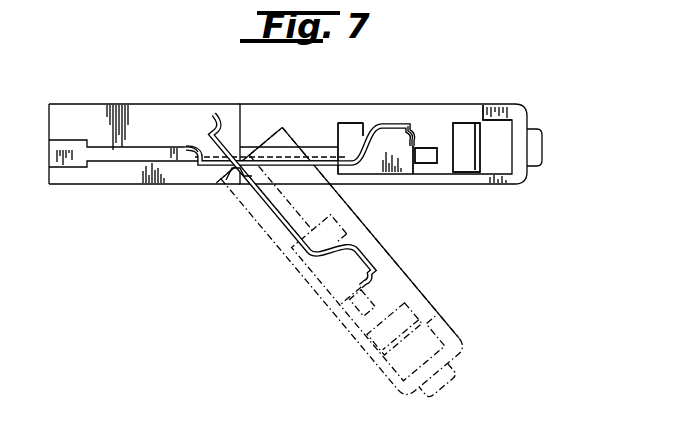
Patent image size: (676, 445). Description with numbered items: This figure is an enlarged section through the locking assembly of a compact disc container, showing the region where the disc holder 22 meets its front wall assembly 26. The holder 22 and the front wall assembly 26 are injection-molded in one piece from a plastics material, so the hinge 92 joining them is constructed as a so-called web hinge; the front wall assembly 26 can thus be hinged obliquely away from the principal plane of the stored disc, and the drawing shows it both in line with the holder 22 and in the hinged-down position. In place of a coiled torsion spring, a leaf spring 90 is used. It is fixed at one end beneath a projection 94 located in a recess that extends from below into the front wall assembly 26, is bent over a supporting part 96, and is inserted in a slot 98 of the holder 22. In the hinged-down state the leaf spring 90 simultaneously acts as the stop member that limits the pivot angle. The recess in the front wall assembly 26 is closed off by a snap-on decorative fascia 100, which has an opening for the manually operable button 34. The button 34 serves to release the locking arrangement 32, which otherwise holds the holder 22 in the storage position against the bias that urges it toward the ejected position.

The disc holder 22 is at (63, 184).
The front wall assembly 26 is at (276, 118).
The locking arrangement 32 is at (463, 136).
The manually operable button 34 is at (543, 147).
The leaf spring 90 is at (268, 210).
The hinge 92 is at (236, 181).
The projection 94 is at (416, 134).
The supporting part 96 is at (356, 142).
The slot 98 is at (185, 163).
The snap-on decorative fascia 100 is at (519, 115).